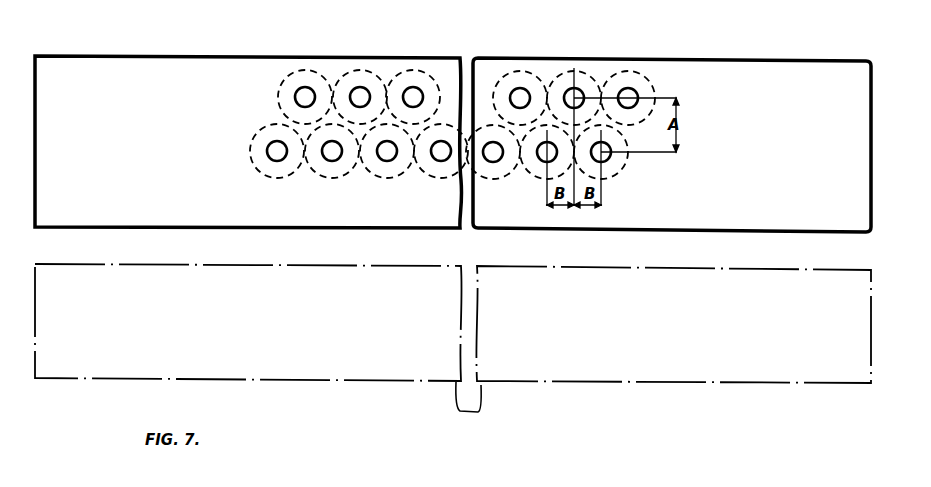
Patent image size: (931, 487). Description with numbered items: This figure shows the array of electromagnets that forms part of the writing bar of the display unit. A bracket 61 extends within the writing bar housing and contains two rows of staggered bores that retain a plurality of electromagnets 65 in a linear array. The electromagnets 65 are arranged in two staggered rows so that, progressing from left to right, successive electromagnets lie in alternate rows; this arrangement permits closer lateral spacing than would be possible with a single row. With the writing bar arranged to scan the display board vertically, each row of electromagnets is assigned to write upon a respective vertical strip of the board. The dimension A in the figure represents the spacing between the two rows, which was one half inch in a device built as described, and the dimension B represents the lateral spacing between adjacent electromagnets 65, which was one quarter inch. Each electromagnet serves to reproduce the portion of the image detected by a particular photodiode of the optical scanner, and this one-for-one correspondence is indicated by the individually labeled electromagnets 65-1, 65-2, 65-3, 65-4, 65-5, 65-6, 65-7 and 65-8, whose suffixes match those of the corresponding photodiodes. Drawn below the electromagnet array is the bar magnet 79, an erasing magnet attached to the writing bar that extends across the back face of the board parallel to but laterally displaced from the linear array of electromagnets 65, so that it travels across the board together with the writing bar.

The bracket 61 is at (236, 57).
The electromagnets 65 is at (524, 70).
The electromagnet 65-1 is at (255, 164).
The electromagnet 65-2 is at (282, 95).
The electromagnet 65-3 is at (322, 181).
The electromagnet 65-4 is at (371, 46).
The electromagnet 65-5 is at (386, 180).
The electromagnet 65-6 is at (438, 48).
The electromagnet 65-7 is at (462, 180).
The electromagnet 65-8 is at (463, 68).
The bar magnet 79 is at (483, 402).